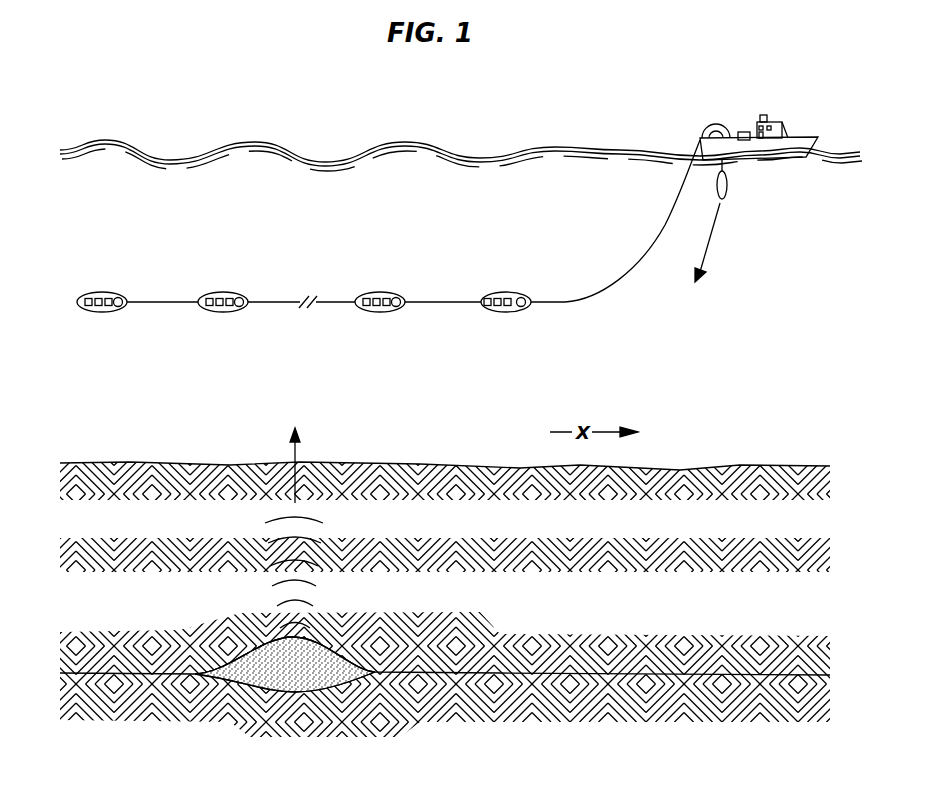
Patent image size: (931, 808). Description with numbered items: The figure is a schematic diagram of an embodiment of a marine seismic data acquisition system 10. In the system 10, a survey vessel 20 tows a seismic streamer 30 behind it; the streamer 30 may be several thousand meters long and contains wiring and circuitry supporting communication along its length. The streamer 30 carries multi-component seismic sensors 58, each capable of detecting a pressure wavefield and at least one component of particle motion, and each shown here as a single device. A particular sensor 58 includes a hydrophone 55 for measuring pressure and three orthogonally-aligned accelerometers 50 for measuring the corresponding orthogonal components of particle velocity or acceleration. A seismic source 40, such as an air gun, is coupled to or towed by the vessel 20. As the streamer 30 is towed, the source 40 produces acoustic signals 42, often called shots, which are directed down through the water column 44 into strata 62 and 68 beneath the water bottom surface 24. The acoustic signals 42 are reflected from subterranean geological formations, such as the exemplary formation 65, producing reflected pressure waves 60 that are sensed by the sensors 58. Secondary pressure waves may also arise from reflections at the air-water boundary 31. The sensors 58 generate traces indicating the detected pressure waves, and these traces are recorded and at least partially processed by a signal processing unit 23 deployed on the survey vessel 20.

The marine seismic data acquisition system 10 is at (248, 110).
The survey vessel 20 is at (812, 135).
The signal processing unit 23 is at (743, 131).
The water bottom surface 24 is at (720, 467).
The seismic streamer 30 is at (668, 223).
The air-water boundary 31 is at (397, 145).
The seismic source 40 is at (728, 185).
The acoustic signal 42 is at (713, 228).
The water column 44 is at (725, 331).
The accelerometers 50 is at (507, 298).
The hydrophone 55 is at (520, 297).
The multi-component seismic sensor 58 is at (98, 291).
The pressure waves 60 is at (262, 588).
The stratum 62 is at (419, 649).
The formation 65 is at (283, 676).
The stratum 68 is at (419, 714).